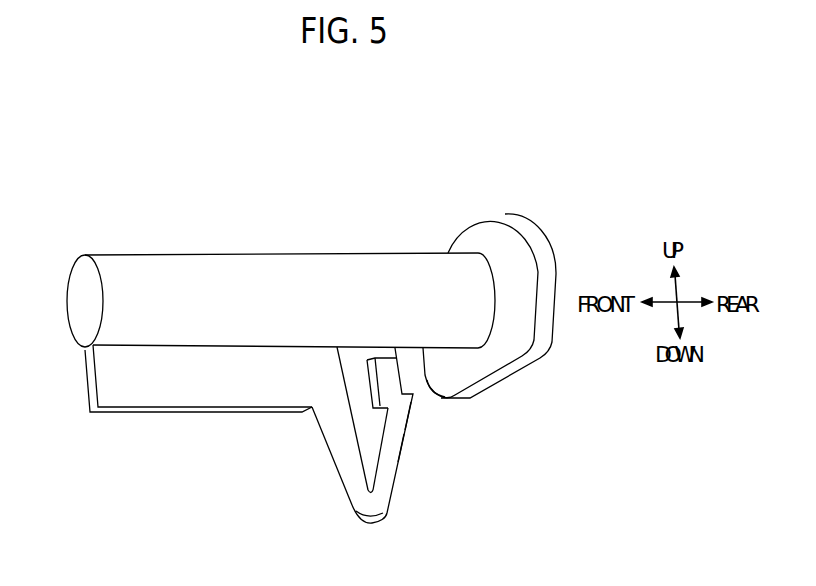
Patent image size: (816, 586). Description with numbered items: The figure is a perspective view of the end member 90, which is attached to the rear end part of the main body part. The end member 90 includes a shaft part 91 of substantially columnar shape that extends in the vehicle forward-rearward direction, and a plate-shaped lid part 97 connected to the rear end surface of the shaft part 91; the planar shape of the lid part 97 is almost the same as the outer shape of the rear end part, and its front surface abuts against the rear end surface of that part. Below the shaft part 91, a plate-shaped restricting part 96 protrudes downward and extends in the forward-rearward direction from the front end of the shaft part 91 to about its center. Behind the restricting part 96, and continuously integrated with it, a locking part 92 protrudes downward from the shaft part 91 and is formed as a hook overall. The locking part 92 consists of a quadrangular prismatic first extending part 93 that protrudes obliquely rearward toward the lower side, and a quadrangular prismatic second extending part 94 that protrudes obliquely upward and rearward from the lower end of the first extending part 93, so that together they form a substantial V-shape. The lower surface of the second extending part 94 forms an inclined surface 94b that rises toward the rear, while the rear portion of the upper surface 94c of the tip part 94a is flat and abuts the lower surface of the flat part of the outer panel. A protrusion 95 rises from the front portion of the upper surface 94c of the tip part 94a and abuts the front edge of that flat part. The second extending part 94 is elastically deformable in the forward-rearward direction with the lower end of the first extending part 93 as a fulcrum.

The end member 90 is at (75, 200).
The shaft part 91 is at (281, 253).
The locking part 92 is at (345, 502).
The first extending part 93 is at (335, 472).
The second extending part 94 is at (392, 493).
The tip part 94a is at (410, 427).
The inclined surface 94b is at (400, 460).
The upper surface 94c is at (418, 388).
The protrusion 95 is at (385, 348).
The restricting part 96 is at (193, 413).
The lid part 97 is at (533, 213).